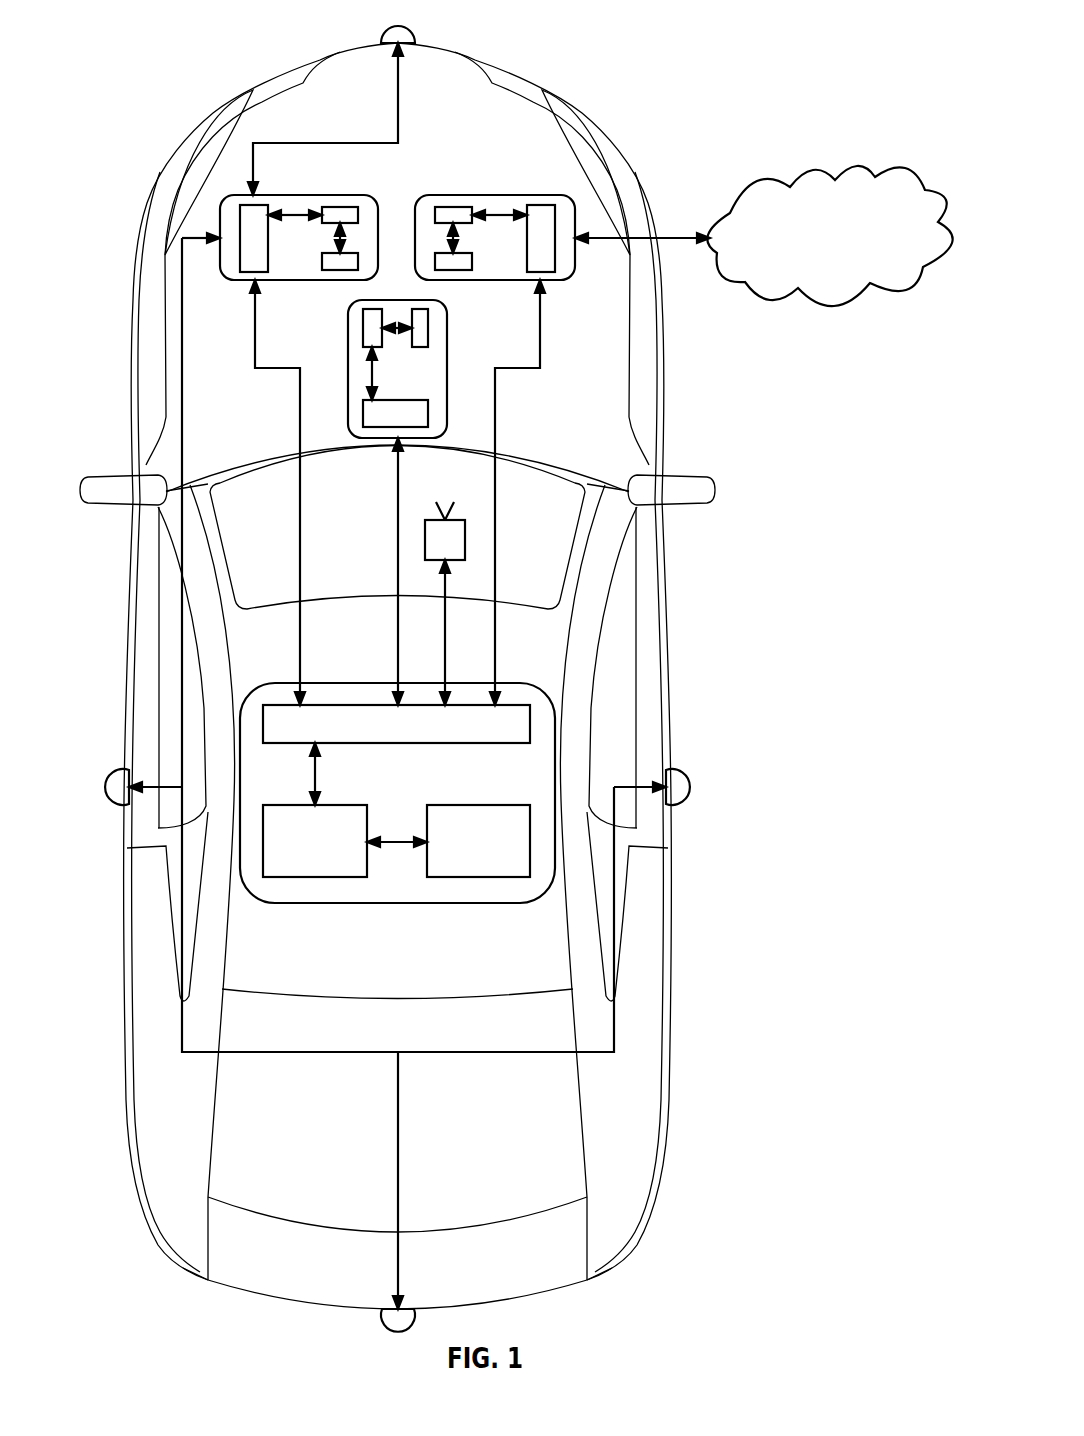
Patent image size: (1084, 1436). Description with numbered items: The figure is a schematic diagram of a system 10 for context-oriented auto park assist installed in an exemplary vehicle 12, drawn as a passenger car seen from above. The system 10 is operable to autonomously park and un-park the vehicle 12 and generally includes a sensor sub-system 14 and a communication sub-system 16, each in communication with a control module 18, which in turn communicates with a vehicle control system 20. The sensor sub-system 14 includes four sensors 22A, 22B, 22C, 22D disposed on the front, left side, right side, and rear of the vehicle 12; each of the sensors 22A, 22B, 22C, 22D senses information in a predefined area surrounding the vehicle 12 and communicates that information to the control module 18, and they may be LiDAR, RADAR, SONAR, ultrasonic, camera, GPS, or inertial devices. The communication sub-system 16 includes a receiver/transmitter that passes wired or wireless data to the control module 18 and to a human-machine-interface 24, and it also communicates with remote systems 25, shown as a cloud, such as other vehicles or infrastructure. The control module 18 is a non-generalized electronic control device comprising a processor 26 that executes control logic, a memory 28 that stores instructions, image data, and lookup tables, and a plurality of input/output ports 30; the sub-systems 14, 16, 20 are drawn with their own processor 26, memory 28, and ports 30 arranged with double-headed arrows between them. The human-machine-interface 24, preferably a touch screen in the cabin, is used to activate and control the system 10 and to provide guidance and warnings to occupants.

The system for context-oriented auto park assist 10 is at (754, 36).
The vehicle 12 is at (553, 78).
The sensor sub-system 14 is at (295, 195).
The communication sub-system 16 is at (490, 195).
The control module 18 is at (522, 683).
The vehicle control system 20 is at (448, 368).
The sensor 22A is at (410, 28).
The sensor 22B is at (114, 772).
The sensor 22C is at (683, 783).
The sensor 22D is at (380, 1313).
The human-machine-interface 24 is at (432, 555).
The remote systems 25 is at (818, 251).
The processor 26 is at (343, 207).
The memory 28 is at (417, 300).
The input/output ports 30 is at (238, 245).